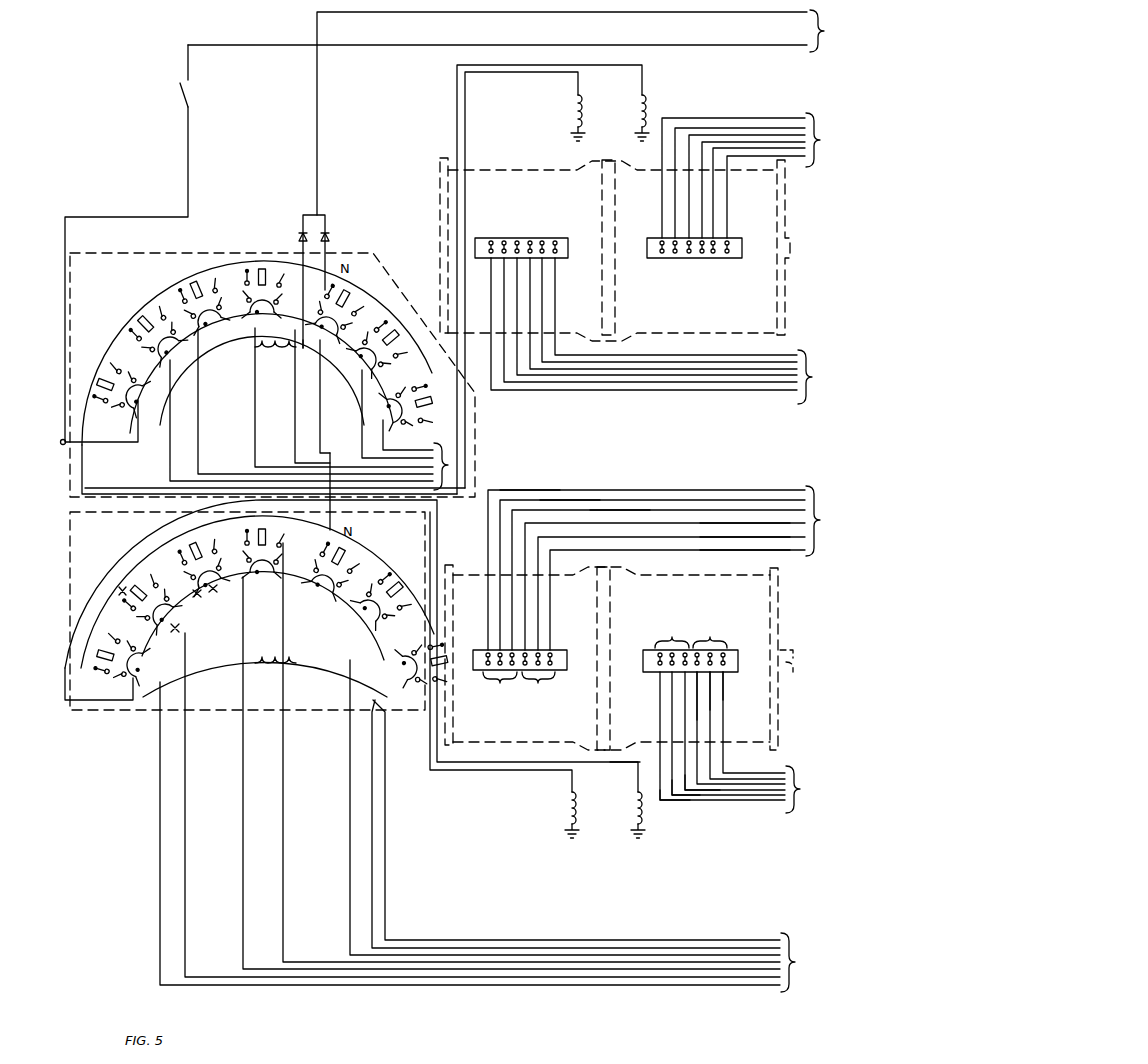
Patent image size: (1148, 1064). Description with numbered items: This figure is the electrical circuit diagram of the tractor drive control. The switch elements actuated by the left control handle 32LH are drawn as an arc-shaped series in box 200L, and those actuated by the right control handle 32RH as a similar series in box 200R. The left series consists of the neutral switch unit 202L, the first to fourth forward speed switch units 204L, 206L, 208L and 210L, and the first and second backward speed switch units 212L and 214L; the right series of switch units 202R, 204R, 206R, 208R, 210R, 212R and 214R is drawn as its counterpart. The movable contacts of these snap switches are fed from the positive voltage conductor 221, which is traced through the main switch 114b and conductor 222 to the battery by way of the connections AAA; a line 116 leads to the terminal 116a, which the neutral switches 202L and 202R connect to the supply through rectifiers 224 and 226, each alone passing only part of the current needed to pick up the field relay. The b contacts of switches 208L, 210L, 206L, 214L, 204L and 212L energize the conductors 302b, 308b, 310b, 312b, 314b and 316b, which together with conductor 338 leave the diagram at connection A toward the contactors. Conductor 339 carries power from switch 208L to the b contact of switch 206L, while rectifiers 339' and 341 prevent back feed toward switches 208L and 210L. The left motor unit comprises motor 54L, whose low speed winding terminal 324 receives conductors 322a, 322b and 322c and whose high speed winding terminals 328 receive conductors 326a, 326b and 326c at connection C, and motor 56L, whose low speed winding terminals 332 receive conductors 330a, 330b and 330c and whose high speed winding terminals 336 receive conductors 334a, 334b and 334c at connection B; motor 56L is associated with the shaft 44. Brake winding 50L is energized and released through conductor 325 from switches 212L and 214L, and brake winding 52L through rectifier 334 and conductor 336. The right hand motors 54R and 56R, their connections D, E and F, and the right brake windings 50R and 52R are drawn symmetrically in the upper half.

The power supply line 116 is at (756, 16).
The conductor 222 is at (748, 47).
The inter-diagram connection AAA is at (831, 31).
The main switch 114b is at (192, 99).
The positive voltage conductor 221 is at (190, 148).
The terminal 116a is at (318, 215).
The rectifier 224 is at (298, 238).
The rectifier 226 is at (328, 237).
The right solenoid coil 50R is at (525, 280).
The right solenoid coil 52R is at (553, 279).
The right terminal block 54R is at (521, 234).
The right terminal block 56R is at (694, 260).
The inter-diagram connection D is at (658, 331).
The inter-diagram connection E is at (746, 175).
The connection group F is at (445, 466).
The right hand switch box 200R is at (236, 253).
The right hand neutral switch 202R is at (351, 295).
The right switch contact unit 204R is at (263, 293).
The right switch contact unit 206R is at (204, 305).
The right switch contact unit 208R is at (158, 335).
The right switch contact unit 210R is at (121, 389).
The right switch contact unit 212R is at (379, 349).
The right switch contact unit 214R is at (408, 407).
The right hand control handle 32RH is at (262, 380).
The left hand switch box 200L is at (86, 712).
The neutral switch unit 202L is at (349, 548).
The first forward speed switch unit 204L is at (275, 566).
The second forward speed switch unit 206L is at (182, 541).
The third forward speed switch unit 208L is at (141, 576).
The fourth forward speed switch unit 210L is at (95, 643).
The first backward speed switch unit 212L is at (391, 586).
The second backward speed switch unit 214L is at (387, 676).
The left hand control handle 32LH is at (265, 677).
The rectifier 334 is at (122, 590).
The conductor 339 is at (207, 612).
The rectifier 339' is at (223, 617).
The rectifier 341 is at (176, 631).
The energizing conductor 308b is at (159, 848).
The energizing conductor 302b is at (186, 857).
The energizing conductor 310b is at (242, 890).
The energizing conductor 314b is at (284, 850).
The energizing conductor 316b is at (349, 883).
The energizing conductor 312b is at (373, 850).
The conductor 338 is at (386, 890).
The inter-diagram connection A is at (794, 962).
The inter-diagram connection B is at (736, 742).
The inter-diagram connection C is at (660, 568).
The motor 54L is at (520, 684).
The high speed winding terminals 328 is at (500, 686).
The low speed winding terminal 324 is at (538, 686).
The high speed conductor 326a is at (526, 490).
The high speed conductor 326b is at (565, 500).
The high speed conductor 326c is at (624, 508).
The conductor 322a is at (741, 524).
The conductor 322b is at (774, 540).
The conductor 322c is at (798, 552).
The motor 56L is at (690, 638).
The high speed winding terminals 336 is at (614, 775).
The low speed winding terminals 332 is at (710, 636).
The shaft 44 is at (781, 648).
The conductor 330a is at (724, 683).
The conductor 330b is at (711, 700).
The conductor 330c is at (698, 715).
The conductor 334a is at (733, 791).
The conductor 334b is at (698, 796).
The conductor 334c is at (664, 800).
The conductor 325 is at (452, 770).
The brake solenoid winding 50L is at (556, 815).
The brake solenoid winding 52L is at (622, 815).